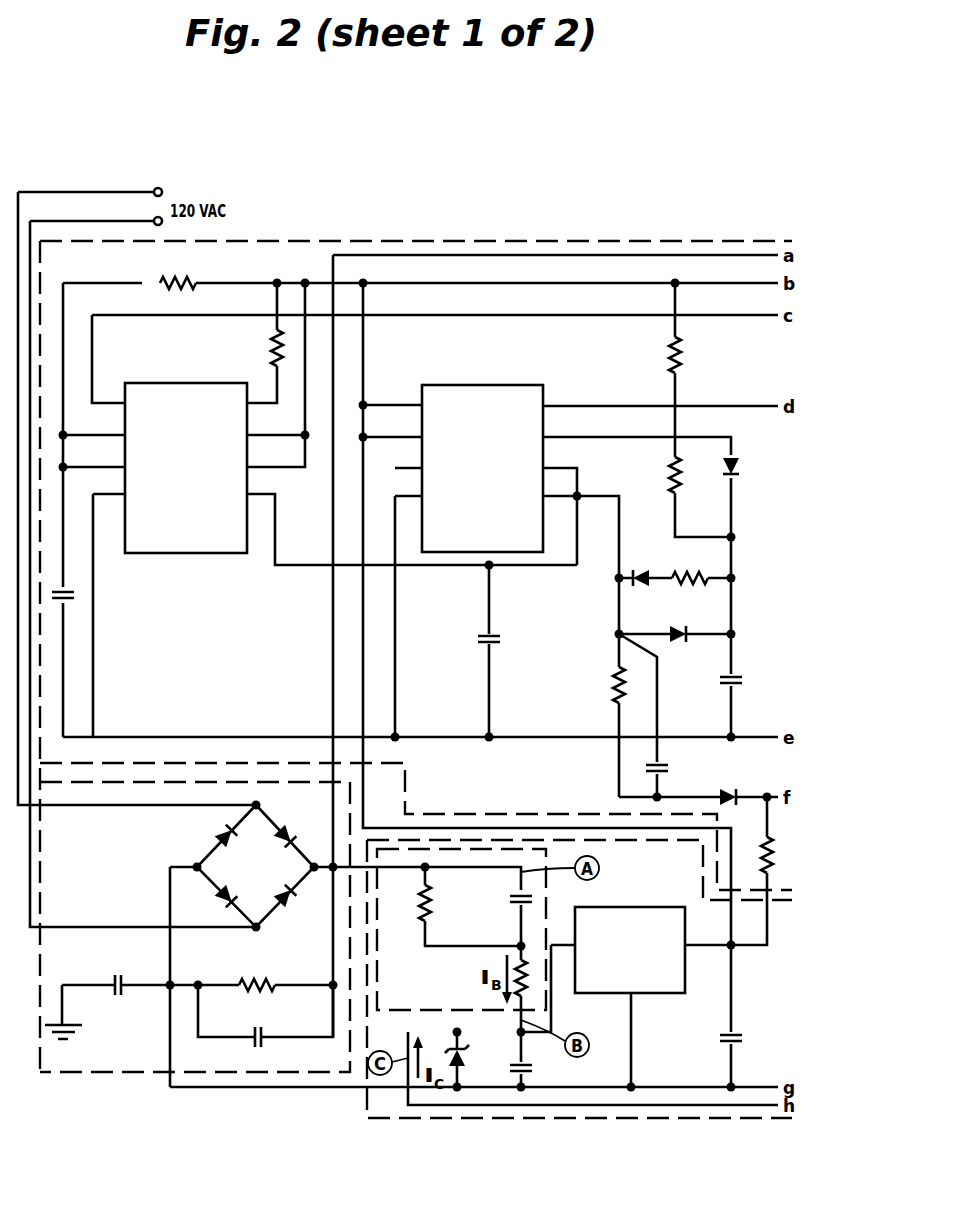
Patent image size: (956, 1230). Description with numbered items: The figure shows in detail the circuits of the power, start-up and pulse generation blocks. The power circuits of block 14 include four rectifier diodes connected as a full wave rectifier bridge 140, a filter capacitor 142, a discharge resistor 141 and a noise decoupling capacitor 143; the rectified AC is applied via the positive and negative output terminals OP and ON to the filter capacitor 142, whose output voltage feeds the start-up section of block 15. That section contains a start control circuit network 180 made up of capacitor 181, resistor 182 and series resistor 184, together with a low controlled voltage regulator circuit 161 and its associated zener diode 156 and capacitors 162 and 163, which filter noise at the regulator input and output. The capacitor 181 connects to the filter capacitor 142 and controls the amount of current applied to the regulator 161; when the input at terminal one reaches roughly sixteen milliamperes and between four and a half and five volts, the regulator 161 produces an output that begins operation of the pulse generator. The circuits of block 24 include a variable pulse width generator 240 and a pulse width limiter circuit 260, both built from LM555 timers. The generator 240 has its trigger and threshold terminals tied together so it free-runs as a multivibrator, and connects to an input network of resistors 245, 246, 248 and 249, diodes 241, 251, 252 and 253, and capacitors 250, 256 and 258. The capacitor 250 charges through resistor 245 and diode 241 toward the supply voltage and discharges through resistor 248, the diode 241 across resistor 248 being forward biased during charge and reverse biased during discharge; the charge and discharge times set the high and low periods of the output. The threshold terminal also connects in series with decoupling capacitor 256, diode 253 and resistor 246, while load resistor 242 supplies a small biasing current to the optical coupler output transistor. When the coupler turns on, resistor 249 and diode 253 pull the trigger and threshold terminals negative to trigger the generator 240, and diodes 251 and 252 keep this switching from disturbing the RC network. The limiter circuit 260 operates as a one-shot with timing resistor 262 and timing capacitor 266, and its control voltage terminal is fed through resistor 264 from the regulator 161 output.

The power circuits block 14 is at (96, 860).
The full wave rectifier bridge 140 is at (267, 880).
The discharge resistor 141 is at (258, 984).
The filter capacitor 142 is at (263, 1030).
The noise decoupling capacitor 143 is at (121, 976).
The start-up section block 15 is at (766, 1008).
The zener diode 156 is at (462, 1058).
The voltage regulator circuit 161 is at (619, 907).
The capacitor 162 is at (533, 1068).
The capacitor 163 is at (722, 1042).
The start control circuit network 180 is at (416, 986).
The capacitor 181 is at (512, 904).
The resistor 182 is at (429, 898).
The series resistor 184 is at (524, 985).
The pulse generator block 24 is at (468, 790).
The variable pulse width generator 240 is at (477, 385).
The diode 241 is at (740, 470).
The load resistor 242 is at (764, 843).
The resistor 245 is at (708, 578).
The resistor 246 is at (684, 352).
The resistor 248 is at (668, 478).
The resistor 249 is at (610, 686).
The capacitor 250 is at (724, 690).
The diode 251 is at (640, 570).
The diode 252 is at (674, 630).
The diode 253 is at (724, 790).
The decoupling capacitor 256 is at (668, 768).
The capacitor 258 is at (496, 638).
The pulse width limiter circuit 260 is at (150, 383).
The timing resistor 262 is at (186, 282).
The resistor 264 is at (272, 347).
The timing capacitor 266 is at (76, 590).